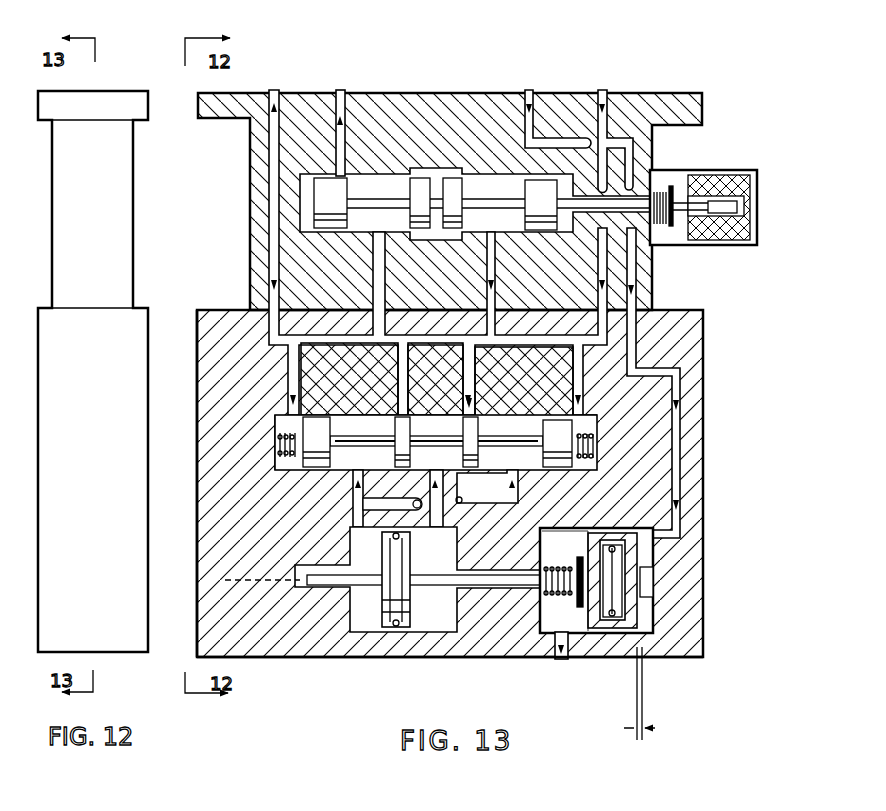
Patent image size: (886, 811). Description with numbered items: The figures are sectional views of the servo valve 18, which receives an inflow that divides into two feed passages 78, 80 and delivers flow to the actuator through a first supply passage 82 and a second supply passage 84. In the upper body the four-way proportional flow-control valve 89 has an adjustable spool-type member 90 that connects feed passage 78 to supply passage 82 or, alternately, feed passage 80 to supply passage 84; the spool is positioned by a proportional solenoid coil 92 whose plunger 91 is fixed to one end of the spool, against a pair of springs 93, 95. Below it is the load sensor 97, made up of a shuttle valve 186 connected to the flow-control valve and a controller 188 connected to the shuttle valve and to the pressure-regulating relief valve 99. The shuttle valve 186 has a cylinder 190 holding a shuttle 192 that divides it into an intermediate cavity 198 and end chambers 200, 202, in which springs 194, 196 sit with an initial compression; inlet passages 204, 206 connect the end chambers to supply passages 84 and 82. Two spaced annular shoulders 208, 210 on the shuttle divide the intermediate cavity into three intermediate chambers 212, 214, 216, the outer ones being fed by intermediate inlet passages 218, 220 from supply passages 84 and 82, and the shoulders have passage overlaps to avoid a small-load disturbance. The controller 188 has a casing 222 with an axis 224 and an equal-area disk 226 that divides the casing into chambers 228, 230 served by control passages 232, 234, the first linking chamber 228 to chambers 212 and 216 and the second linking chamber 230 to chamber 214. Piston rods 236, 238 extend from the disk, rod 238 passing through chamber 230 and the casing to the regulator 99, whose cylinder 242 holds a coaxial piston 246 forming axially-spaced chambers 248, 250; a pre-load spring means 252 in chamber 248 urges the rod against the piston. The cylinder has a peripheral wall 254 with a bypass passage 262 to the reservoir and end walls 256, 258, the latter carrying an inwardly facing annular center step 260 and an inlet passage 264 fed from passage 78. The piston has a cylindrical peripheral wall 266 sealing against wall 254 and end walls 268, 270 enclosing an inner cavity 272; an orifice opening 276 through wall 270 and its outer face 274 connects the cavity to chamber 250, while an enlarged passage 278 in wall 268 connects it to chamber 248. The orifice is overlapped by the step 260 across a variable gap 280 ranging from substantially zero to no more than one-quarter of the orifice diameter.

In FIG. 12, the servo valve 18 is at (127, 44).
In FIG. 13, the servo valve 18 is at (713, 42).
In FIG. 13, the four-way proportional flow-control valve 89 is at (441, 98).
In FIG. 13, the second supply passage 84 is at (277, 134).
In FIG. 13, the feed passage 80 is at (346, 133).
In FIG. 13, the spool-type member 90 is at (416, 186).
In FIG. 13, the feed passage 78 is at (531, 126).
In FIG. 13, the first supply passage 82 is at (607, 126).
In FIG. 13, the spring 93 is at (652, 188).
In FIG. 13, the spring 95 is at (673, 190).
In FIG. 13, the proportional solenoid coil 92 is at (734, 172).
In FIG. 13, the plunger 91 is at (698, 208).
In FIG. 13, the inlet passage 204 is at (291, 370).
In FIG. 13, the spring 194 is at (289, 414).
In FIG. 13, the end chamber 200 is at (276, 452).
In FIG. 13, the shuttle valve 186 is at (291, 480).
In FIG. 13, the control passage 232 is at (352, 520).
In FIG. 13, the controller 188 is at (324, 549).
In FIG. 13, the load sensor 97 is at (223, 547).
In FIG. 13, the axis 224 is at (262, 580).
In FIG. 13, the piston rod 236 is at (373, 582).
In FIG. 13, the equal-area disk 226 is at (392, 586).
In FIG. 13, the casing 222 is at (432, 656).
In FIG. 13, the chamber 228 is at (417, 579).
In FIG. 13, the chamber 230 is at (437, 556).
In FIG. 13, the piston rod 238 is at (531, 582).
In FIG. 13, the pre-load spring means 252 is at (545, 603).
In FIG. 13, the enlarged passage 278 is at (557, 615).
In FIG. 13, the bypass passage 262 is at (554, 650).
In FIG. 13, the peripheral wall 254 is at (598, 630).
In FIG. 13, the piston 246 is at (603, 636).
In FIG. 13, the cylinder 242 is at (610, 640).
In FIG. 13, the chamber 248 is at (565, 581).
In FIG. 13, the end wall 256 is at (533, 553).
In FIG. 13, the inner cavity 272 is at (616, 560).
In FIG. 13, the end wall 268 is at (593, 562).
In FIG. 13, the cylindrical peripheral wall 266 is at (623, 538).
In FIG. 13, the end wall 270 is at (634, 541).
In FIG. 13, the inlet passage 264 is at (678, 463).
In FIG. 13, the outer face 274 is at (653, 557).
In FIG. 13, the annular center step 260 is at (659, 576).
In FIG. 13, the pressure-regulating relief valve 99 is at (692, 588).
In FIG. 13, the end wall 258 is at (656, 593).
In FIG. 13, the chamber 250 is at (657, 610).
In FIG. 13, the orifice opening 276 is at (629, 589).
In FIG. 13, the variable gap 280 is at (645, 724).
In FIG. 13, the inlet passage 206 is at (580, 378).
In FIG. 13, the spring 196 is at (597, 437).
In FIG. 13, the end chamber 202 is at (584, 467).
In FIG. 13, the intermediate inlet passage 220 is at (477, 355).
In FIG. 13, the shuttle 192 is at (482, 438).
In FIG. 13, the cylinder 190 is at (520, 411).
In FIG. 13, the annular shoulder 210 is at (468, 405).
In FIG. 13, the intermediate inlet passage 218 is at (404, 379).
In FIG. 13, the annular shoulder 208 is at (402, 428).
In FIG. 13, the intermediate cavity 198 is at (436, 442).
In FIG. 13, the intermediate chamber 212 is at (344, 444).
In FIG. 13, the intermediate chamber 214 is at (442, 460).
In FIG. 13, the intermediate chamber 216 is at (533, 445).
In FIG. 13, the control passage 234 is at (511, 504).